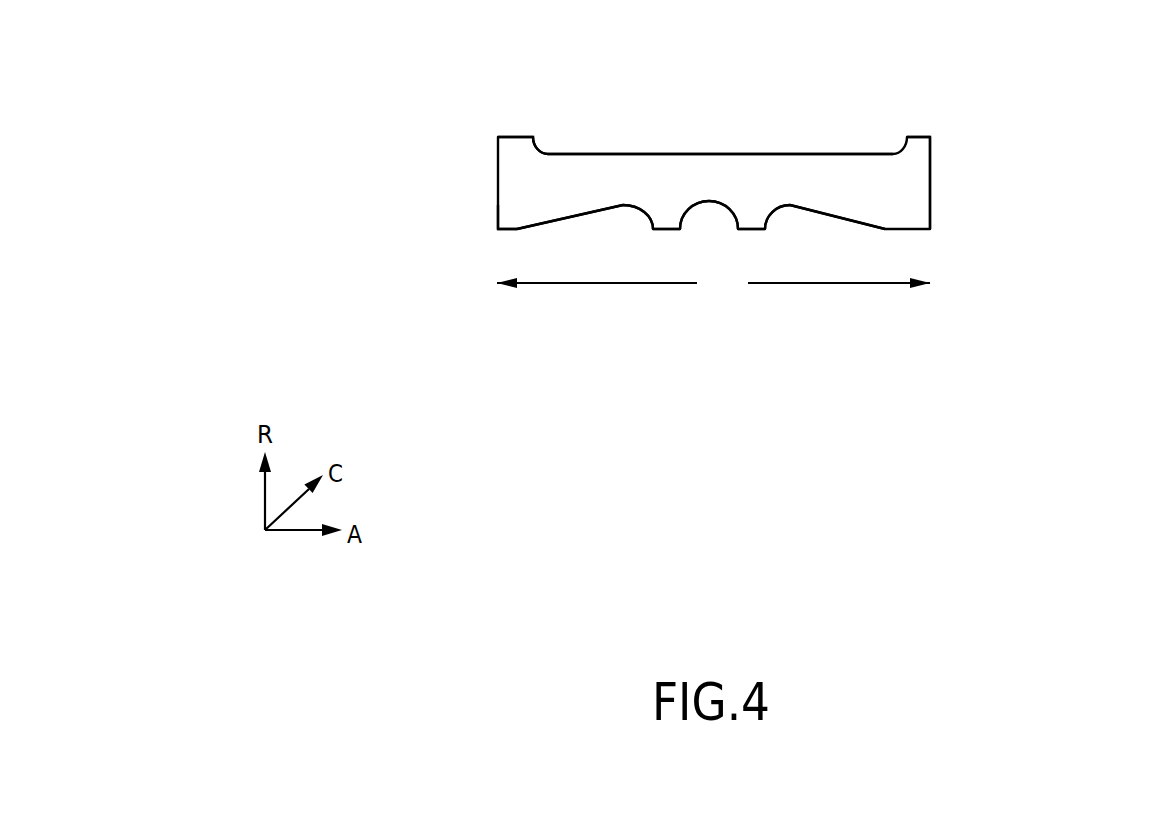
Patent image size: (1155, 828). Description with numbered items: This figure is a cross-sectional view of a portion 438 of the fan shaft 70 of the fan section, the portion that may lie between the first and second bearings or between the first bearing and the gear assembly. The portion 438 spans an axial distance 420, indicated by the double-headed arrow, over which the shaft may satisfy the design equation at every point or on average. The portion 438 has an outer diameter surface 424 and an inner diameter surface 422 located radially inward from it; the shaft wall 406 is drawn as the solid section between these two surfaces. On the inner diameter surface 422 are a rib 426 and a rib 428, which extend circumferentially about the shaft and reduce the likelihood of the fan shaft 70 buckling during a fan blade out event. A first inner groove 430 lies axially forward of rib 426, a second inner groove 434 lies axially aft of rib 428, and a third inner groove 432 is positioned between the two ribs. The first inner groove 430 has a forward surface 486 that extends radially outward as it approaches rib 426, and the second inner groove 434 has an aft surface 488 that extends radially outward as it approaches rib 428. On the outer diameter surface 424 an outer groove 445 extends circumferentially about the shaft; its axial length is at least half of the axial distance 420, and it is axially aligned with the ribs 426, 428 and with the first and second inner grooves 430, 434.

The fan shaft 70 is at (1098, 195).
The seal body 406 is at (498, 205).
The axial distance 420 is at (713, 282).
The inner diameter surface 422 is at (500, 230).
The outer diameter surface 424 is at (515, 136).
The rib 426 is at (663, 230).
The rib 428 is at (758, 227).
The first inner groove 430 is at (627, 207).
The third inner groove 432 is at (717, 203).
The second inner groove 434 is at (788, 205).
The portion of fan shaft 438 is at (929, 182).
The outer groove 445 is at (695, 154).
The forward surface 486 is at (547, 225).
The aft surface 488 is at (850, 222).